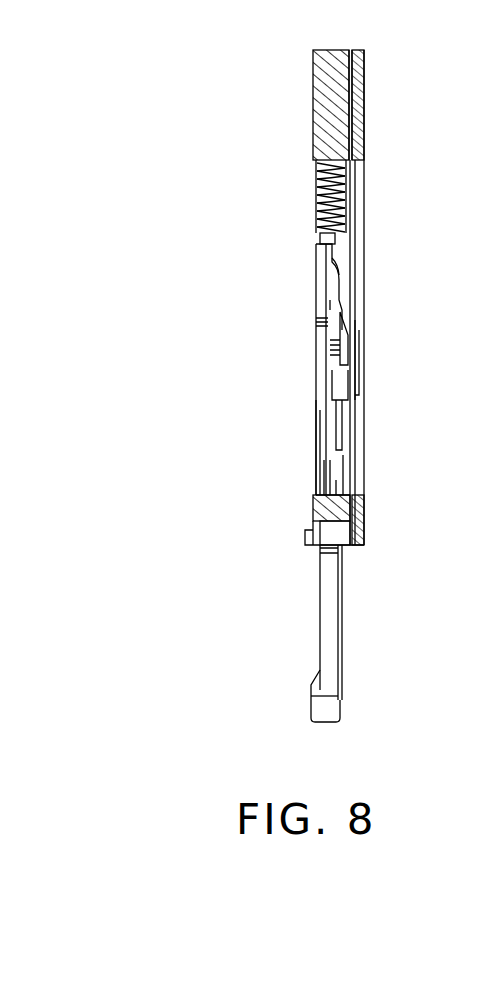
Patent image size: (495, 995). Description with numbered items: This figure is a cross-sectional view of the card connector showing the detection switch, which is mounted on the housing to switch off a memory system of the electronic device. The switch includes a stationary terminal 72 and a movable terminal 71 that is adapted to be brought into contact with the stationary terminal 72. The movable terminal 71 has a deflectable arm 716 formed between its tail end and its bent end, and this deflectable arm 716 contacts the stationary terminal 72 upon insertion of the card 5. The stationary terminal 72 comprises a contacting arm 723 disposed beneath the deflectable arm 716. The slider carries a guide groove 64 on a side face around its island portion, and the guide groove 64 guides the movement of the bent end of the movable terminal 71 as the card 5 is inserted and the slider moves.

The card 5 is at (333, 625).
The guide groove 64 is at (358, 312).
The movable terminal 71 is at (326, 298).
The stationary terminal 72 is at (345, 162).
The deflectable arm 716 is at (331, 262).
The contacting arm 723 is at (352, 248).